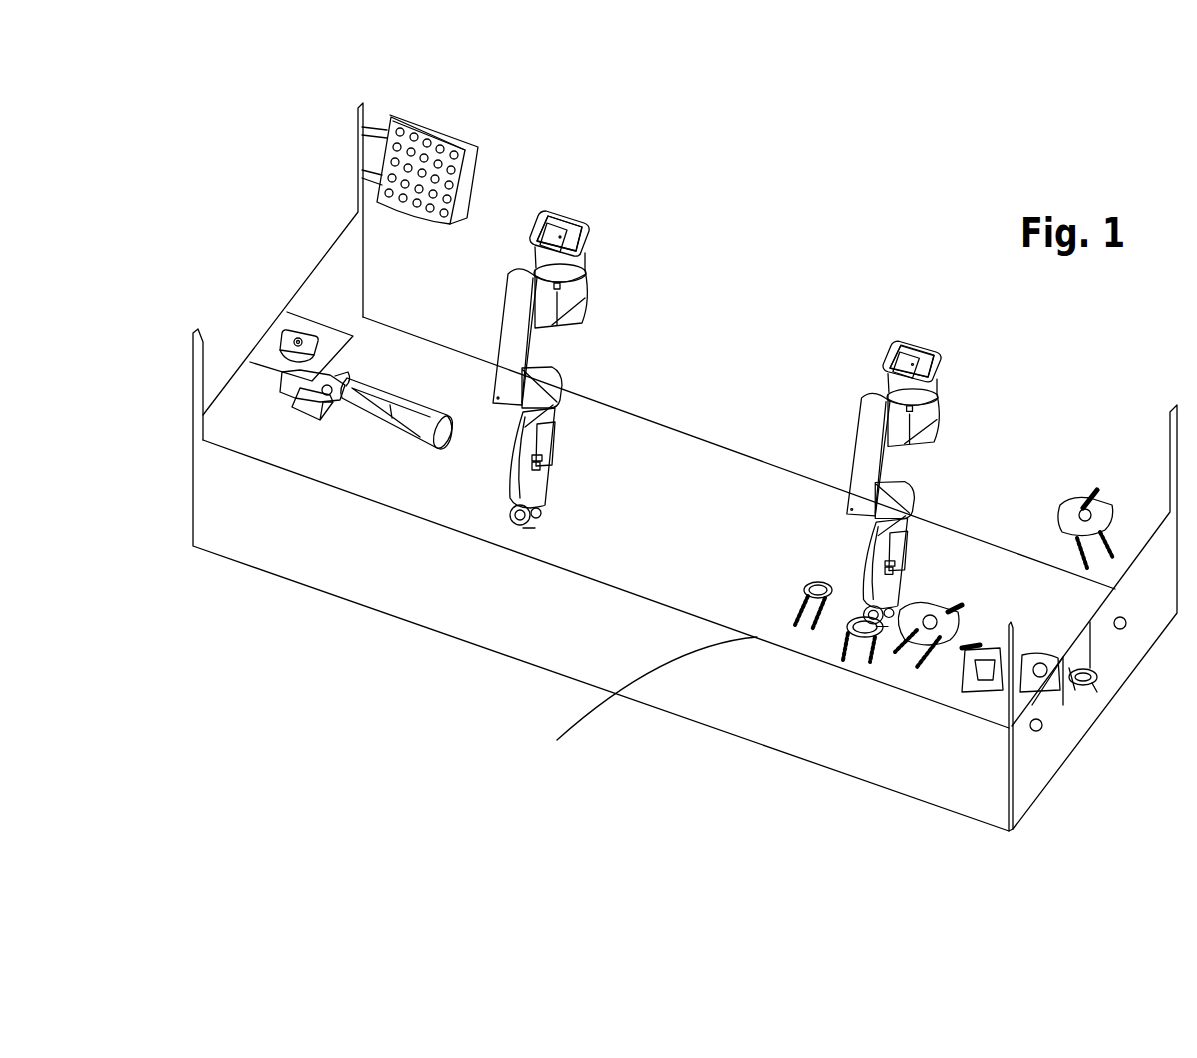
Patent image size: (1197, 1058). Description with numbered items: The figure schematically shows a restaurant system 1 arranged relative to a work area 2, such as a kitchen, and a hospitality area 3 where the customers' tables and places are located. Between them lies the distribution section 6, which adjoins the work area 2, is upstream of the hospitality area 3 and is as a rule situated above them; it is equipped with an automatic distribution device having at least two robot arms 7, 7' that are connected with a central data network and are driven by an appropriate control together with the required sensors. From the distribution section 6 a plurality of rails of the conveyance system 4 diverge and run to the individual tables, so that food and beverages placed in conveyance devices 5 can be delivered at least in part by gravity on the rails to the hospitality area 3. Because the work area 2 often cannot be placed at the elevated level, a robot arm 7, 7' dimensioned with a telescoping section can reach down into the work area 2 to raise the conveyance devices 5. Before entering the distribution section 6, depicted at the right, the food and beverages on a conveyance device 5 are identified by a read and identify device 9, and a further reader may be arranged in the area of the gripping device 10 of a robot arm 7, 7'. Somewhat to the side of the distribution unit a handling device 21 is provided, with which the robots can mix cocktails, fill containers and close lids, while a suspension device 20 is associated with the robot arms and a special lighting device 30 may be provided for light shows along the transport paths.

The restaurant system 1 is at (797, 207).
The work area 2 is at (725, 560).
The hospitality area 3 is at (643, 702).
The conveyance system 4 is at (782, 613).
The conveyance device 5 is at (817, 583).
The distribution section 6 is at (703, 742).
The robot arm 7 is at (459, 369).
The robot arm 7' is at (873, 483).
The read and identify device 9 is at (1123, 617).
The gripping device 10 is at (1054, 525).
The suspension device 20 is at (588, 235).
The handling device 21 is at (325, 345).
The lighting device 30 is at (447, 122).